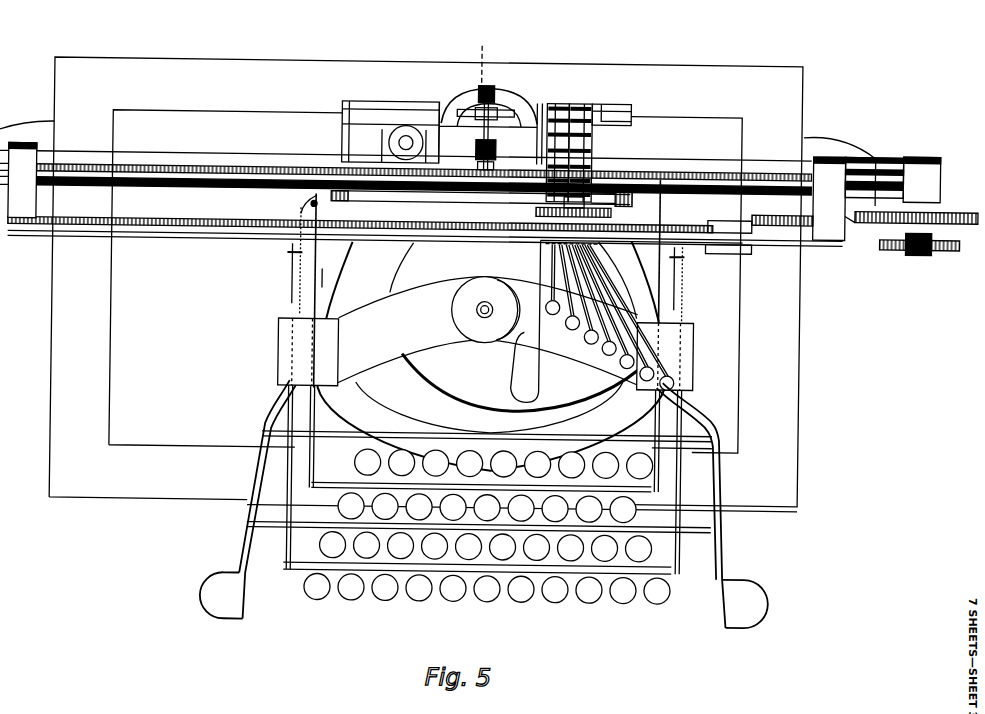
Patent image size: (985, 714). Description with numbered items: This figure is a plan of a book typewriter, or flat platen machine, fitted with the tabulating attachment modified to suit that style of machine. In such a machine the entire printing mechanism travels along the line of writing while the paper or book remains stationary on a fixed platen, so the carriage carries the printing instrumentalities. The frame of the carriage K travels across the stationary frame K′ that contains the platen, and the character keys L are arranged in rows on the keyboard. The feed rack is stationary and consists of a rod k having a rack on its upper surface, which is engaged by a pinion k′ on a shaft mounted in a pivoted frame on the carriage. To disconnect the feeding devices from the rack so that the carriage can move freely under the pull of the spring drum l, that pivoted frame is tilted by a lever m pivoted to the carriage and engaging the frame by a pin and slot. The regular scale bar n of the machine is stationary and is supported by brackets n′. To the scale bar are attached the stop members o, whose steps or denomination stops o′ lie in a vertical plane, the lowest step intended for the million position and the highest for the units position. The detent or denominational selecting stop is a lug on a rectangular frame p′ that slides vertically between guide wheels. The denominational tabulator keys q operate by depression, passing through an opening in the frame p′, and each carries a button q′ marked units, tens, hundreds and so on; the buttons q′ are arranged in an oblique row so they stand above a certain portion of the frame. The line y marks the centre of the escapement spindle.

The centre line of spindle y is at (481, 59).
The rod k is at (226, 158).
The pinion k′ is at (455, 193).
The rectangular frame p′ is at (546, 227).
The denominational tabulator keys q is at (604, 290).
The button q′ is at (610, 346).
The lever m is at (525, 321).
The frame of the carriage K is at (458, 332).
The stationary frame K′ is at (707, 357).
The character keys L is at (632, 546).
The scale bar n is at (780, 238).
The brackets n′ is at (470, 191).
The stop members o is at (731, 238).
The denomination stops o′ is at (733, 222).
The spring drum l is at (868, 240).